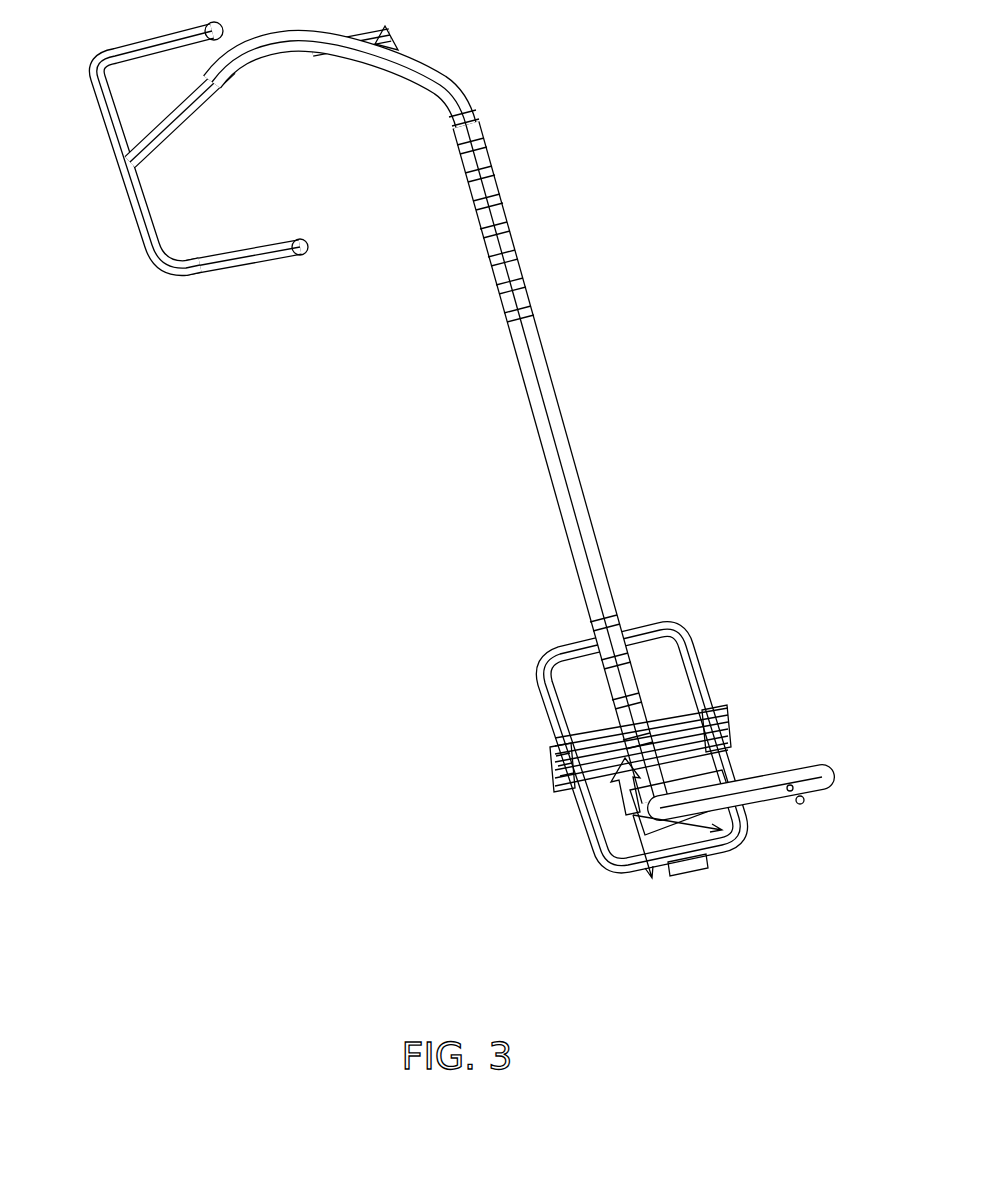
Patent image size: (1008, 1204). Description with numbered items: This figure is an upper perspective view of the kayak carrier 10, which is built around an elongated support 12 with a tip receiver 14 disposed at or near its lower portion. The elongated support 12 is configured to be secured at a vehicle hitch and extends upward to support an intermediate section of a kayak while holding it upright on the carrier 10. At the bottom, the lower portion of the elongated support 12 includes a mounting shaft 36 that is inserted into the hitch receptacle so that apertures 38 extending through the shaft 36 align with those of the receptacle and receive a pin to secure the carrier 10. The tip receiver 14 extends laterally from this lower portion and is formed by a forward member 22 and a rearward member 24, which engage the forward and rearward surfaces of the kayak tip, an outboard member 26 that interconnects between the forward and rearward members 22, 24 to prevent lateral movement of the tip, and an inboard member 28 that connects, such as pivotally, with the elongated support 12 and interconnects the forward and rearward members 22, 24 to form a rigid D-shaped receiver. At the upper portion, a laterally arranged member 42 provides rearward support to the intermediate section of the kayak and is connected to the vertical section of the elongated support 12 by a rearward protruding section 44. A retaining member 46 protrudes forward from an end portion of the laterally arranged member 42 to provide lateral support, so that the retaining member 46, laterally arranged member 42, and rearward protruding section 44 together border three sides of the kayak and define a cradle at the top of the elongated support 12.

The kayak carrier 10 is at (259, 604).
The elongated support 12 is at (584, 392).
The tip receiver 14 is at (483, 807).
The forward member 22 is at (690, 668).
The rearward member 24 is at (548, 722).
The outboard member 26 is at (712, 868).
The inboard member 28 is at (597, 773).
The mounting shaft 36 is at (768, 777).
The apertures 38 is at (800, 800).
The laterally arranged member 42 is at (147, 215).
The rearward protruding section 44 is at (281, 74).
The retaining member 46 is at (250, 262).